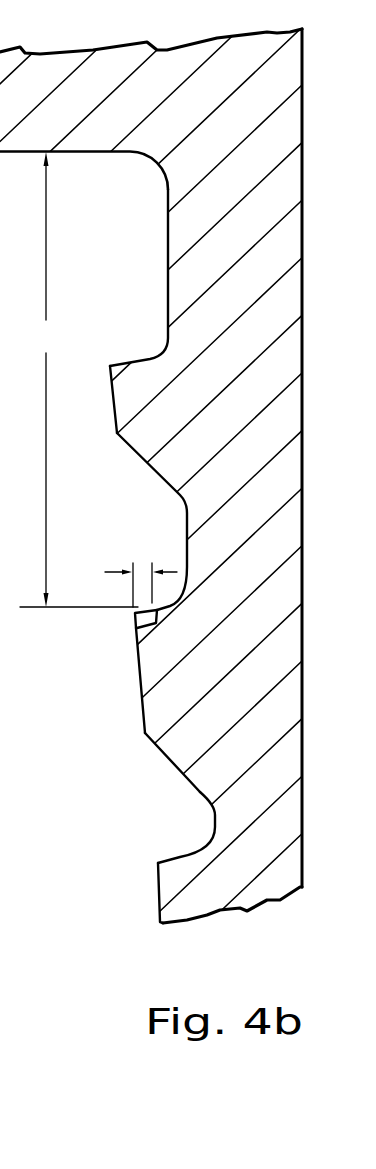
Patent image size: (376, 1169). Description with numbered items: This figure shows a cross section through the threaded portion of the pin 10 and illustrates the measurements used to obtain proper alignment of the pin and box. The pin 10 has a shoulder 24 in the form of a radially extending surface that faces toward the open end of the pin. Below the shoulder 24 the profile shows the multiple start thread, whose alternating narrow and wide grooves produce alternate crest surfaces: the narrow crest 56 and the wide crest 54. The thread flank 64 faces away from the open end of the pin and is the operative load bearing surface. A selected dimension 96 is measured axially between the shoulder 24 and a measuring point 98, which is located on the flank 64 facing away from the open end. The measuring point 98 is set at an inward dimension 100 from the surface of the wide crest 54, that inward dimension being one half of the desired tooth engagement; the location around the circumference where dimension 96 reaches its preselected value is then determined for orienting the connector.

The pin 10 is at (208, 64).
The shoulder 24 is at (78, 153).
The crest surface 56 is at (112, 394).
The selected dimension 96 is at (79, 379).
The measuring point 98 is at (135, 627).
The inward dimension 100 is at (119, 584).
The crest surface 54 is at (143, 707).
The flank 64 is at (177, 857).